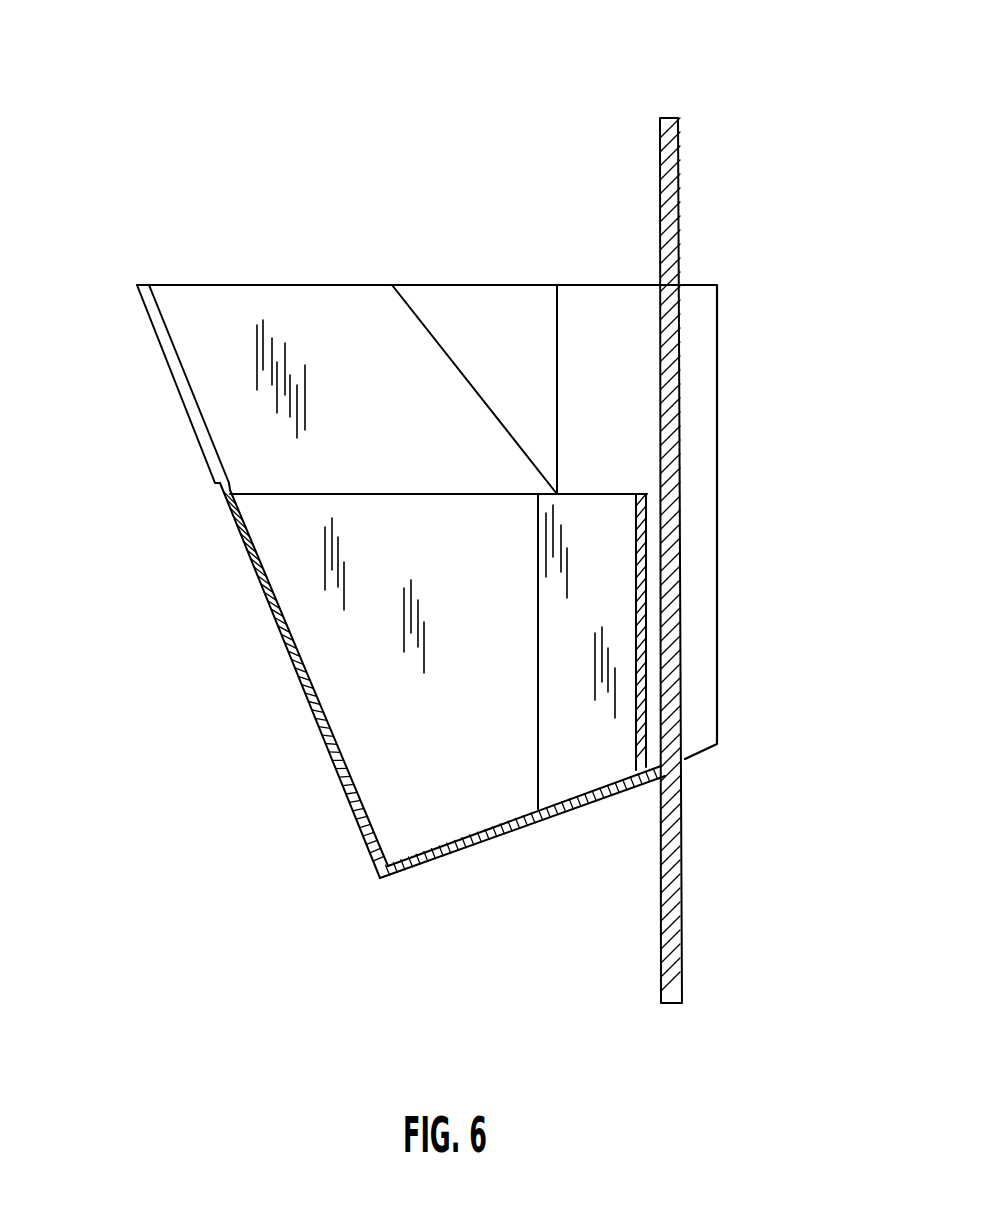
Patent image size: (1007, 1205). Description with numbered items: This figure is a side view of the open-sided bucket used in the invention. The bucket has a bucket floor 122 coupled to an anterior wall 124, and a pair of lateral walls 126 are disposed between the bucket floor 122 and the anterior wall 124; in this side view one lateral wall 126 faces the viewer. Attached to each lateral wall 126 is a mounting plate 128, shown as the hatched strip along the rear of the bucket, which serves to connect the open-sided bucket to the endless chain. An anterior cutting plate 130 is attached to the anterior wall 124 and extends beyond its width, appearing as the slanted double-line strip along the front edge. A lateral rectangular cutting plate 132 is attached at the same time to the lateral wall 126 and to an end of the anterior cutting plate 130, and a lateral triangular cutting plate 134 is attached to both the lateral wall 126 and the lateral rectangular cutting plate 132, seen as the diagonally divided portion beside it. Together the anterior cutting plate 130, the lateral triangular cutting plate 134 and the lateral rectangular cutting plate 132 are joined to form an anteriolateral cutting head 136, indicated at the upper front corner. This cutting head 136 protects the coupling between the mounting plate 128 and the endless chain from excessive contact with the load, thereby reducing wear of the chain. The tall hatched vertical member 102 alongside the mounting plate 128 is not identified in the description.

The panel wall 102 is at (672, 115).
The bucket floor 122 is at (442, 848).
The anterior wall 124 is at (307, 677).
The lateral walls 126 is at (443, 690).
The mounting plate 128 is at (640, 634).
The anterior cutting plate 130 is at (195, 428).
The lateral rectangular cutting plate 132 is at (290, 285).
The lateral triangular cutting plate 134 is at (472, 285).
The anteriolateral cutting head 136 is at (135, 275).